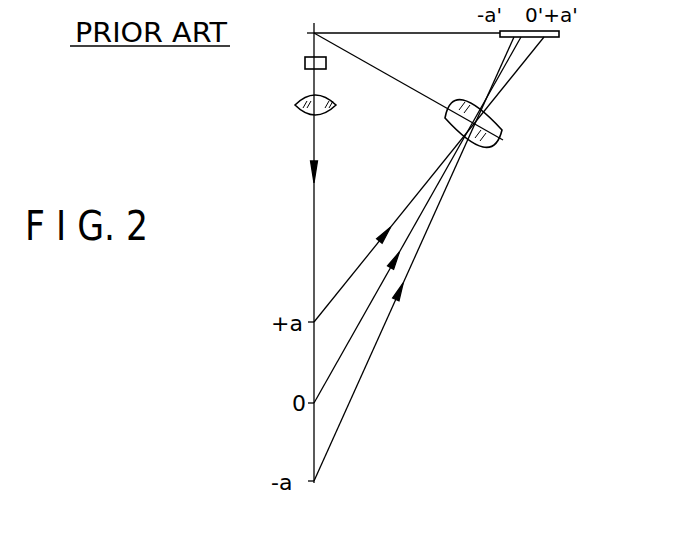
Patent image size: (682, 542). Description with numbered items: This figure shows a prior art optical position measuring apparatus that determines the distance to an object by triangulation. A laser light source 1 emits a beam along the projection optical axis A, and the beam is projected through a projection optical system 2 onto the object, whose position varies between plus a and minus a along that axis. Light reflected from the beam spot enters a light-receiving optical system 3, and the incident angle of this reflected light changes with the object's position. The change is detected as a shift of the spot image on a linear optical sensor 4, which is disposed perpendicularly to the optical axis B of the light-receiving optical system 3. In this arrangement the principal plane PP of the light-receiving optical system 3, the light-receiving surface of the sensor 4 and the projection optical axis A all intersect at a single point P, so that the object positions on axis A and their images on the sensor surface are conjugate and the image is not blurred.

The laser light source 1 is at (304, 61).
The projection optical system 2 is at (297, 106).
The light-receiving optical system 3 is at (492, 145).
The linear optical sensor 4 is at (555, 38).
The projection optical axis A is at (313, 193).
The optical axis of the light-receiving optical system B is at (426, 210).
The intersection point P is at (301, 33).
The principal plane of the light-receiving optical system PP is at (407, 87).